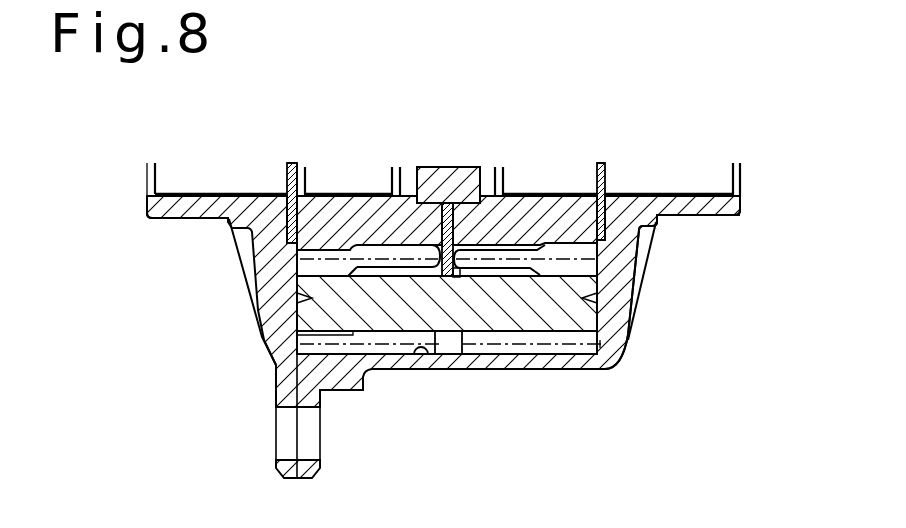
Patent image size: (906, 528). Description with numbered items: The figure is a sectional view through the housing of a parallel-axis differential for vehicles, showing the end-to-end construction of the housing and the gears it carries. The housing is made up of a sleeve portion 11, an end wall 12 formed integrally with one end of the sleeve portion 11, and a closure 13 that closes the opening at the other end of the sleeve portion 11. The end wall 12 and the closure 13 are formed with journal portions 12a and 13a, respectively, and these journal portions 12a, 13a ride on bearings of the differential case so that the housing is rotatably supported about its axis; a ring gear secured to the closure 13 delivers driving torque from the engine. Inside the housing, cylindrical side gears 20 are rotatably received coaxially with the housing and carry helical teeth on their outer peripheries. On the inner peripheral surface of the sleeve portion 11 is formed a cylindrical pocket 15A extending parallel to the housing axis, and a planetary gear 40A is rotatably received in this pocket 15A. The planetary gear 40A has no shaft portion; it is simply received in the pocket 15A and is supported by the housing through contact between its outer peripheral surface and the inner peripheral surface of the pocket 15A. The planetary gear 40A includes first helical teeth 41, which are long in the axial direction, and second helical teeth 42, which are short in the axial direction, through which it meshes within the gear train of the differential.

The sleeve portion 11 is at (525, 370).
The end wall 12 is at (626, 336).
The journal portion 12a is at (693, 217).
The closure 13 is at (256, 327).
The journal portion 13a is at (200, 219).
The pocket 15A is at (426, 352).
The side gear 20 is at (350, 208).
The planetary gear 40A is at (437, 330).
The first helical teeth 41 is at (567, 350).
The second helical teeth 42 is at (333, 347).